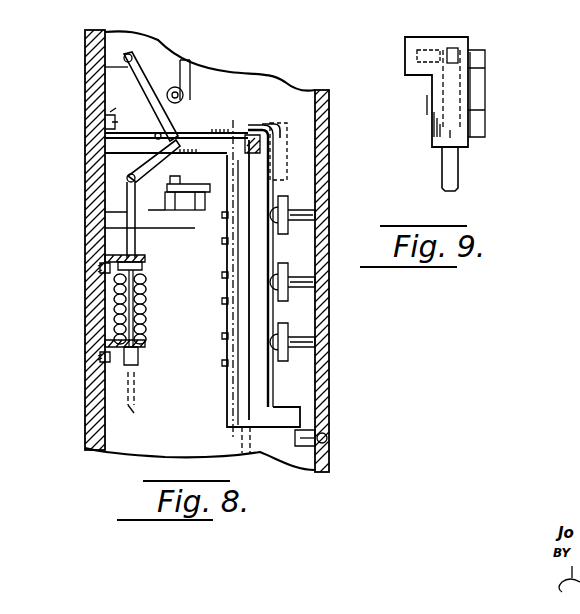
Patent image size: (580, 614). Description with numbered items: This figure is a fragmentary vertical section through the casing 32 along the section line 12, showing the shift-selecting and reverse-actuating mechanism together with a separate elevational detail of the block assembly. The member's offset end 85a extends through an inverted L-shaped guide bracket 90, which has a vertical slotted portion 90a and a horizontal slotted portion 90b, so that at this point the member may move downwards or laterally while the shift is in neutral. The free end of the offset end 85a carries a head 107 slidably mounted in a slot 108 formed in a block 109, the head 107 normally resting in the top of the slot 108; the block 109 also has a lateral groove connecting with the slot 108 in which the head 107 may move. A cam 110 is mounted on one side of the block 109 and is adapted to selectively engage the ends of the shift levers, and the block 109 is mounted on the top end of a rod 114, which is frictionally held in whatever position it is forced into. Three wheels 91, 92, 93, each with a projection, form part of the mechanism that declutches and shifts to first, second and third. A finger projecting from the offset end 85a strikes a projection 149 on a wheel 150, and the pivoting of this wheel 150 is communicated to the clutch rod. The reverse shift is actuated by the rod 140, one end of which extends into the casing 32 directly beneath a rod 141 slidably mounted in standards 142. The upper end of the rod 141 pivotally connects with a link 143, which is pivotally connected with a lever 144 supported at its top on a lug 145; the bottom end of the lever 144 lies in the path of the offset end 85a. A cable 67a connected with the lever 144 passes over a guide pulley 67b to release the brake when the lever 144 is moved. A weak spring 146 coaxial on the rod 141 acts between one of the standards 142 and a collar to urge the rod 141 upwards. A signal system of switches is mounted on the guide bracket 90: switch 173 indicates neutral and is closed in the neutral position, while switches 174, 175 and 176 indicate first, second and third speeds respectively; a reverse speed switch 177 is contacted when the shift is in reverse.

In FIG. 8, the section line 12 is at (63, 52).
In FIG. 8, the casing 32 is at (327, 91).
In FIG. 8, the lug 145 is at (108, 60).
In FIG. 8, the reverse speed switch 177 is at (106, 121).
In FIG. 8, the lever 144 is at (140, 72).
In FIG. 8, the cable 67a is at (193, 58).
In FIG. 8, the guide pulley 67b is at (182, 92).
In FIG. 8, the horizontal slotted portion 90b is at (200, 143).
In FIG. 8, the link 143 is at (127, 171).
In FIG. 8, the projection 149 is at (180, 179).
In FIG. 8, the wheel 150 is at (172, 202).
In FIG. 8, the standards 142 is at (158, 348).
In FIG. 8, the spring 146 is at (138, 268).
In FIG. 8, the rod 141 is at (132, 370).
In FIG. 8, the rod 140 is at (134, 413).
In FIG. 8, the offset end 85a is at (252, 140).
In FIG. 8, the guide bracket 90 is at (266, 157).
In FIG. 8, the cam 110 is at (287, 143).
In FIG. 9, the cam 110 is at (484, 58).
In FIG. 8, the switch 173 is at (287, 177).
In FIG. 8, the wheel 91 is at (318, 210).
In FIG. 8, the wheel 92 is at (318, 296).
In FIG. 8, the wheel 93 is at (318, 348).
In FIG. 8, the switch 174 is at (267, 238).
In FIG. 8, the switch 175 is at (243, 310).
In FIG. 8, the switch 176 is at (250, 377).
In FIG. 8, the vertical slotted portion 90a is at (263, 395).
In FIG. 9, the block 109 is at (470, 143).
In FIG. 9, the head 107 is at (456, 52).
In FIG. 9, the slot 108 is at (441, 44).
In FIG. 9, the rod 114 is at (456, 180).